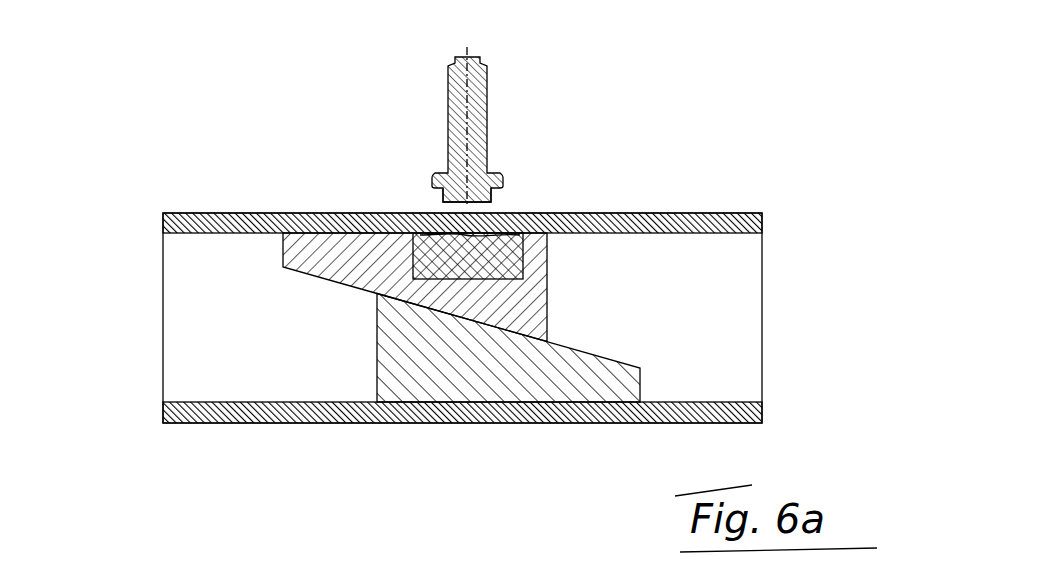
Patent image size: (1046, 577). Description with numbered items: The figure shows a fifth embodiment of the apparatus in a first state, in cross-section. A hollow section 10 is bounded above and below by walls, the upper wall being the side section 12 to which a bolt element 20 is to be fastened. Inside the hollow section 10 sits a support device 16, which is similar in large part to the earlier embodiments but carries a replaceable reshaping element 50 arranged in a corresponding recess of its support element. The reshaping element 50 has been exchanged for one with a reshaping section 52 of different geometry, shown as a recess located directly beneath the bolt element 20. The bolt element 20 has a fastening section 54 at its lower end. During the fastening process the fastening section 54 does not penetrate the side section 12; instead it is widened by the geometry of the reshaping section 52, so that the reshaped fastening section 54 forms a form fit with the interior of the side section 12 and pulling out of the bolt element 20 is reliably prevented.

The hollow section 10 is at (420, 251).
The side section 12 is at (199, 212).
The support device 16 is at (300, 312).
The bolt element 20 is at (524, 106).
The reshaping element 50 is at (405, 262).
The reshaping section 52 is at (499, 247).
The fastening section 54 is at (510, 177).